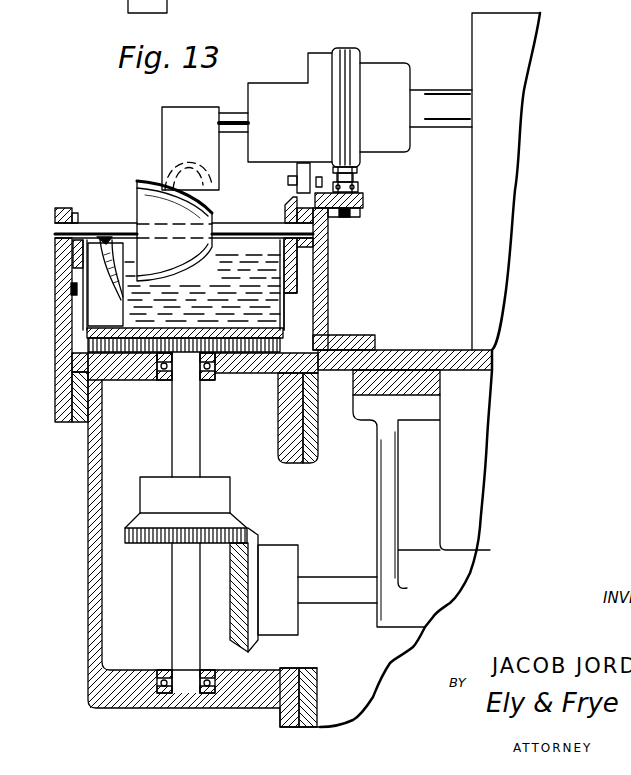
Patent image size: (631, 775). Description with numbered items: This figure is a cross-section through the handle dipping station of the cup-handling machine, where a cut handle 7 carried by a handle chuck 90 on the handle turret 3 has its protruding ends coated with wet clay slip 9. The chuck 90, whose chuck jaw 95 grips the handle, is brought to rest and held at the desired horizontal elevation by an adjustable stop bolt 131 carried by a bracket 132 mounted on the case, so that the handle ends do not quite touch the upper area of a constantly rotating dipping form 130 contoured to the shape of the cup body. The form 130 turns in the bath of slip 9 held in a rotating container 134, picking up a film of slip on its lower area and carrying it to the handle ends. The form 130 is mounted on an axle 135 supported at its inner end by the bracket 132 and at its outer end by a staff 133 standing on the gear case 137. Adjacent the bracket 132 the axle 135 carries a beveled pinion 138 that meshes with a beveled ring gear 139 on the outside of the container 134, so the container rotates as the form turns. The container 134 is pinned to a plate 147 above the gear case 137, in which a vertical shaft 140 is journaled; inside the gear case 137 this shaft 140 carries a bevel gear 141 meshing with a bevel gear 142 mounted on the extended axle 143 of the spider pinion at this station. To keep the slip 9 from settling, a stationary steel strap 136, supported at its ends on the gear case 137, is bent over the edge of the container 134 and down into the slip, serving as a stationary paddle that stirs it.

The handle turret 3 is at (480, 243).
The cut handle 7 is at (203, 190).
The clay slip 9 is at (268, 312).
The handle chuck 90 is at (317, 53).
The chuck jaw 95 is at (183, 96).
The dipping form 130 is at (138, 188).
The adjustable stop bolt 131 is at (357, 187).
The bracket 132 is at (363, 201).
The staff 133 is at (57, 285).
The rotating container 134 is at (86, 314).
The axle 135 is at (228, 226).
The stationary steel strap 136 is at (104, 241).
The gear case 137 is at (88, 476).
The beveled pinion 138 is at (291, 199).
The beveled ring gear 139 is at (297, 284).
The vertical shaft 140 is at (200, 426).
The bevel gear 141 is at (232, 492).
The bevel gear 142 is at (265, 546).
The extended axle 143 is at (352, 574).
The plate 147 is at (129, 369).